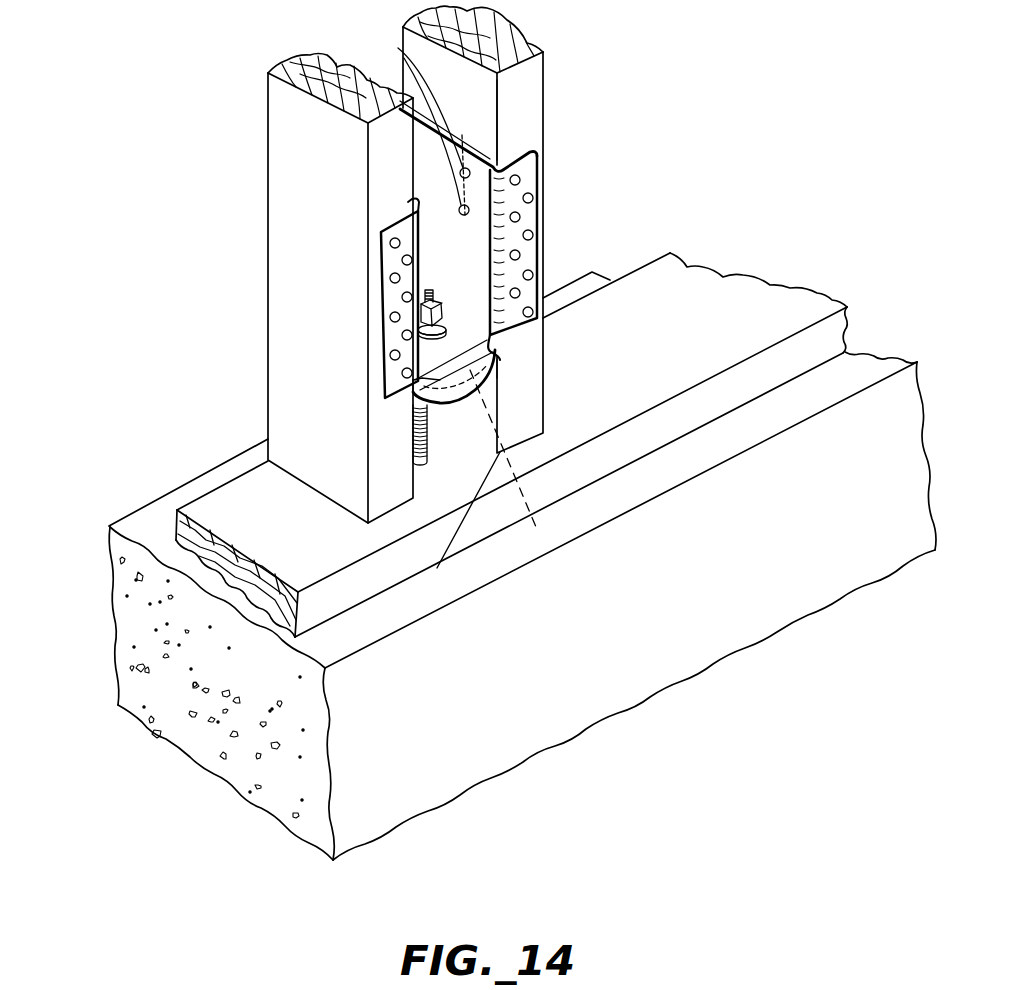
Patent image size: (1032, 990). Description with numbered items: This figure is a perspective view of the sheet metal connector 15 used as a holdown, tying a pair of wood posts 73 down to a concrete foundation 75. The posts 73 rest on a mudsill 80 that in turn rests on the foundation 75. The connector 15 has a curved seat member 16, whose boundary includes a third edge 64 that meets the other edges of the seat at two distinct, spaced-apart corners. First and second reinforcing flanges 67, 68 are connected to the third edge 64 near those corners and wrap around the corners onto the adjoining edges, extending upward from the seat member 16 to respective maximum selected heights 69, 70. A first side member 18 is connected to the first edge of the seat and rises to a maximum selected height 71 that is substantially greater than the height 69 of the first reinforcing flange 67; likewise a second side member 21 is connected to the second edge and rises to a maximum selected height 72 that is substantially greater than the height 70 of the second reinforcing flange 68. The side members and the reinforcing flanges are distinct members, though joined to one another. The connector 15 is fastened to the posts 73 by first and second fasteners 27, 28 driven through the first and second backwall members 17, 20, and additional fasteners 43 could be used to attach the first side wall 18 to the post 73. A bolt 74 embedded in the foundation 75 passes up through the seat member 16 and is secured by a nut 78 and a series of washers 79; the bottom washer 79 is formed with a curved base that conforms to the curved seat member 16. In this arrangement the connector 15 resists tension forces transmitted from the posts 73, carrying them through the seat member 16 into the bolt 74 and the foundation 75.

The sheet metal connector 15 is at (467, 284).
The seat member 16 is at (455, 383).
The first backwall member 17 is at (532, 150).
The first side member 18 is at (450, 140).
The second backwall member 20 is at (415, 212).
The second side member 21 is at (462, 205).
The first fasteners 27 is at (531, 273).
The second fasteners 28 is at (393, 316).
The additional fasteners 43 is at (400, 49).
The third edge 64 is at (520, 454).
The first reinforcing flange 67 is at (498, 348).
The second reinforcing flange 68 is at (422, 393).
The maximum selected height of first reinforcing flange 69 is at (507, 378).
The maximum selected height of second reinforcing flange 70 is at (545, 445).
The maximum selected height of first side member 71 is at (482, 147).
The maximum selected height of second side member 72 is at (392, 220).
The posts 73 is at (293, 145).
The bolt 74 is at (414, 456).
The foundation 75 is at (97, 554).
The nut 78 is at (436, 296).
The washers 79 is at (440, 331).
The mudsill 80 is at (832, 338).